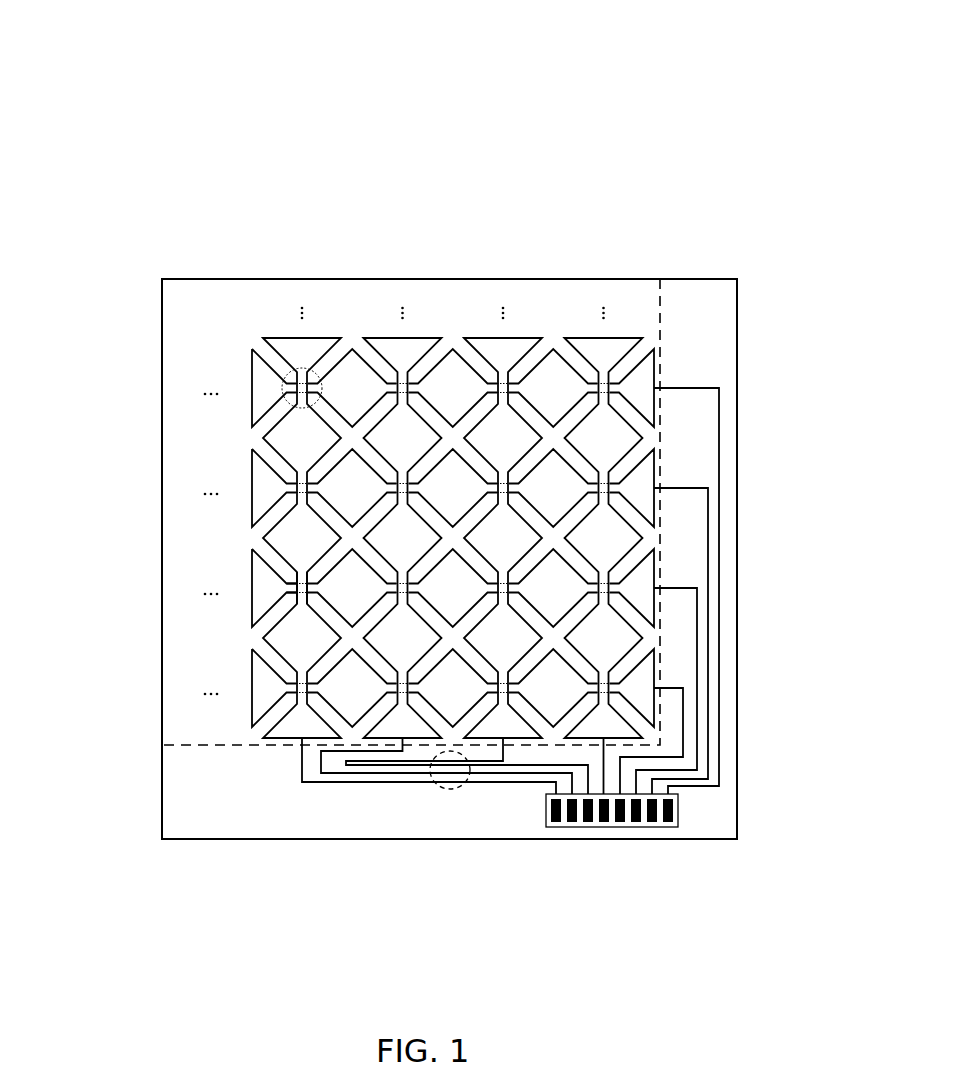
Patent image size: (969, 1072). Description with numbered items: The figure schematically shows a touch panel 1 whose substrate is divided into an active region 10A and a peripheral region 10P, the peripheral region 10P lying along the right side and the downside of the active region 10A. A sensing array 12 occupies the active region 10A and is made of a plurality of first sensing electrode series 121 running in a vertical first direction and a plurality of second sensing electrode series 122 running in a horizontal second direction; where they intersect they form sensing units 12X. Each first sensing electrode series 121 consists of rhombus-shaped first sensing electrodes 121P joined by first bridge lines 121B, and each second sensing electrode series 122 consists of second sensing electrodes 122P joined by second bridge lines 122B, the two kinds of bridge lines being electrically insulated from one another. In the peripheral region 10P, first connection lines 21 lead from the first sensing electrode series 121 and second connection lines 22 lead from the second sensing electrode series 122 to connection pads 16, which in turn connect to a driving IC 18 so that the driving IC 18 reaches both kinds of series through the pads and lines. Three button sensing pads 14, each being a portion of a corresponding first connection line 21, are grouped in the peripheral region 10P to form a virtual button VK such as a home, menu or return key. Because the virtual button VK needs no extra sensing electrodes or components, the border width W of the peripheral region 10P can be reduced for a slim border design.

The touch panel 1 is at (626, 63).
The active region 10A is at (161, 207).
The peripheral region 10P is at (752, 207).
The sensing array 12 is at (241, 330).
The sensing unit 12X is at (300, 368).
The first sensing electrode series 121 is at (341, 268).
The second sensing electrode series 122 is at (148, 348).
The first sensing electrode 121P is at (329, 449).
The second sensing electrode 122P is at (376, 397).
The first bridge line 121B is at (294, 583).
The second bridge line 122B is at (292, 594).
The second connection line 22 is at (719, 420).
The first connection line 21 is at (310, 784).
The button sensing pad 14 is at (440, 768).
The virtual button VK is at (455, 789).
The driving IC 18 is at (593, 827).
The connection pad 16 is at (634, 827).
The border width W is at (255, 745).